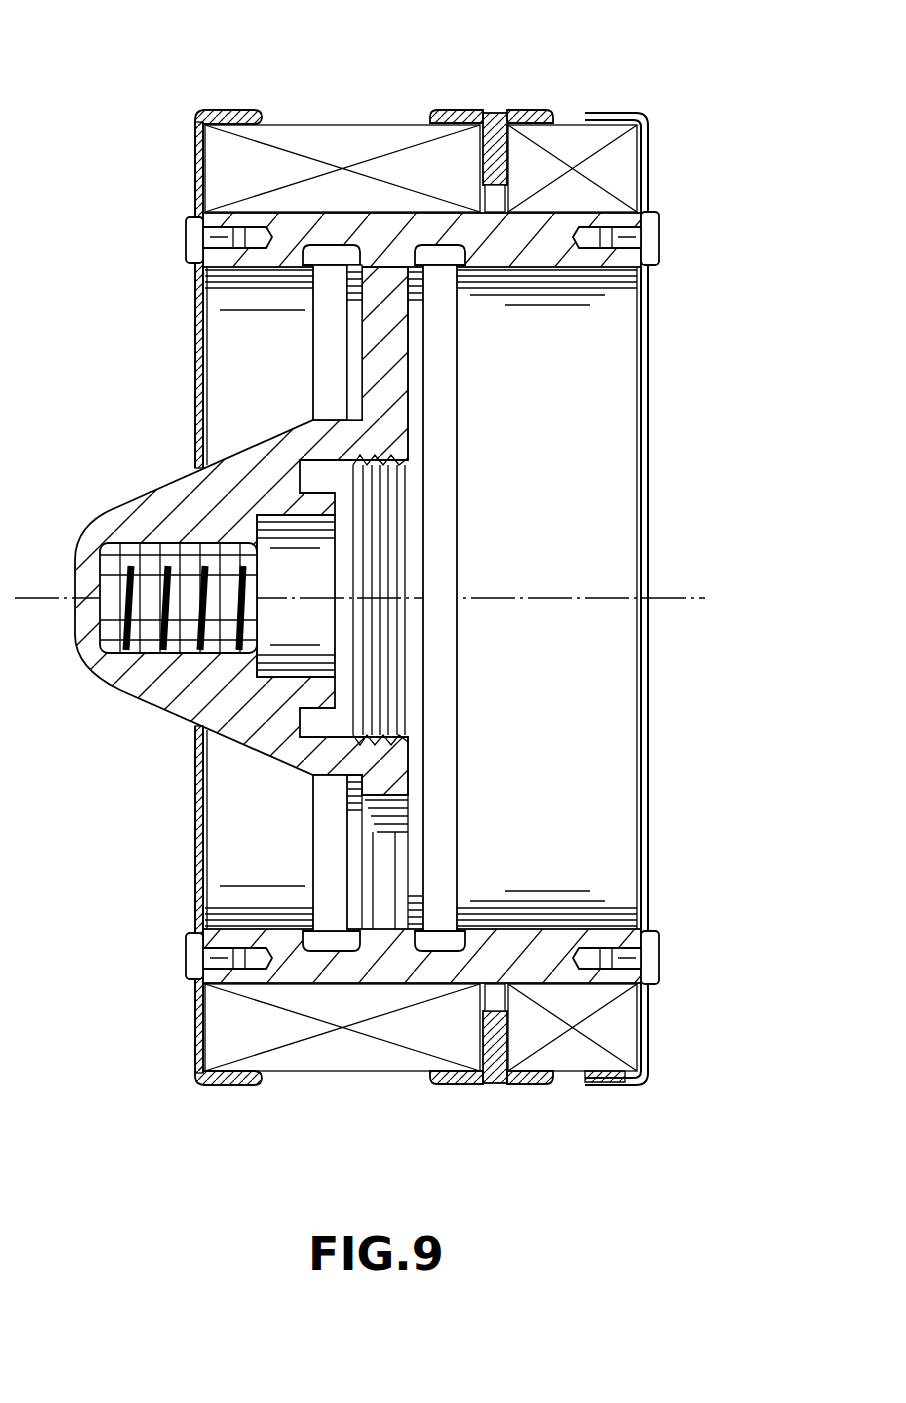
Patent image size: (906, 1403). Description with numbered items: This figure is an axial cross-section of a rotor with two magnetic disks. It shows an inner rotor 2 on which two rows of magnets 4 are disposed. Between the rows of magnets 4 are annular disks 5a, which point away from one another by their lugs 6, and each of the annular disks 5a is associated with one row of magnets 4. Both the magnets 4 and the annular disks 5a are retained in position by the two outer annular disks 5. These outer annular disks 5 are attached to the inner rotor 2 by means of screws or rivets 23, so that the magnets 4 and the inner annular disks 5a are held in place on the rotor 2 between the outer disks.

The inner rotor 2 is at (293, 250).
The magnets 4 is at (572, 148).
The outer annular disks 5 is at (648, 125).
The annular disks 5a is at (488, 113).
The lugs 6 is at (226, 110).
The screws or rivets 23 is at (660, 237).